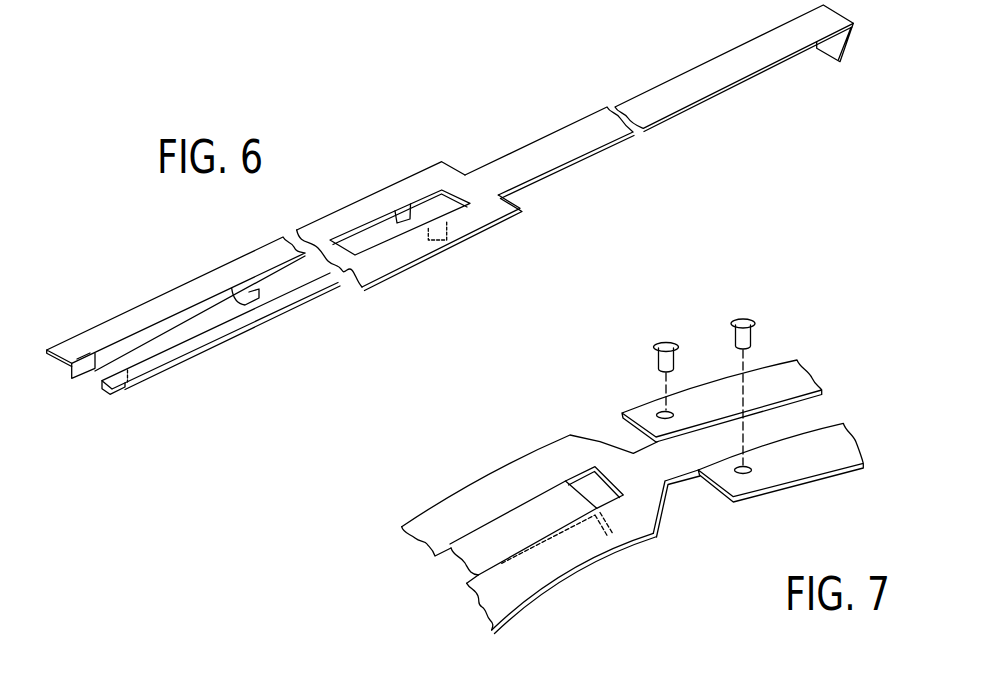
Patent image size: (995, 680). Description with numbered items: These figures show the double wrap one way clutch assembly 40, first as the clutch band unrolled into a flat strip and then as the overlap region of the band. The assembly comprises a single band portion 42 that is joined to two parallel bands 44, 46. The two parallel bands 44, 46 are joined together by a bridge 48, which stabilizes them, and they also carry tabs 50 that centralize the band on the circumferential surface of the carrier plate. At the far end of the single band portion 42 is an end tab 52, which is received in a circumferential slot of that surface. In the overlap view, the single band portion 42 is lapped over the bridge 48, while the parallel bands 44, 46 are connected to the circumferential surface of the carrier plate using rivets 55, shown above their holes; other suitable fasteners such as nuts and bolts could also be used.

In FIG. 7, the double wrap one way clutch assembly 40 is at (668, 546).
In FIG. 6, the single band portion 42 is at (730, 88).
In FIG. 6, the band 44 is at (397, 273).
In FIG. 6, the band 46 is at (365, 195).
In FIG. 6, the bridge 48 is at (231, 288).
In FIG. 6, the tabs 50 is at (407, 218).
In FIG. 6, the end tab 52 is at (848, 50).
In FIG. 7, the rivets 55 is at (661, 343).